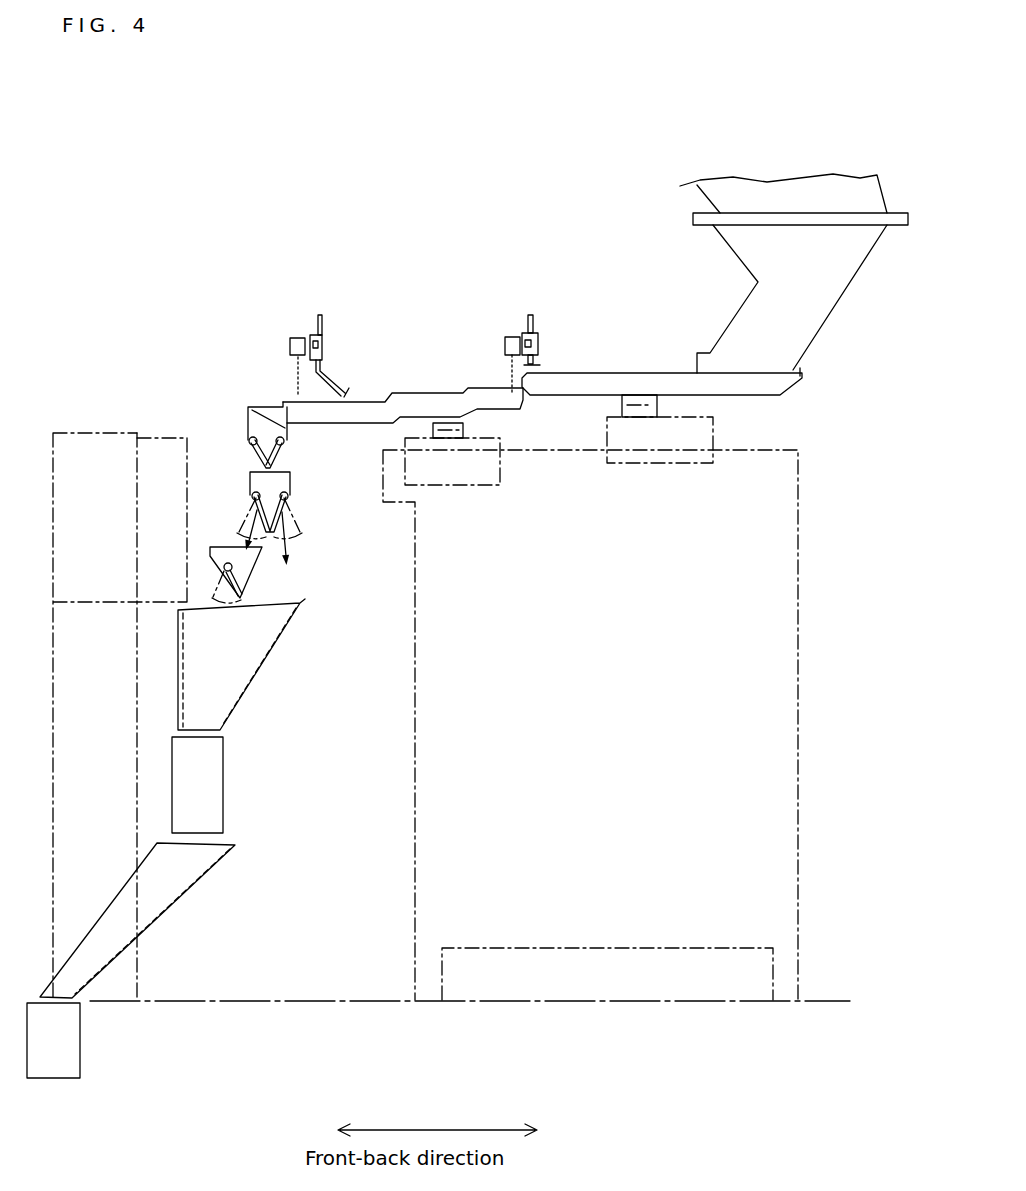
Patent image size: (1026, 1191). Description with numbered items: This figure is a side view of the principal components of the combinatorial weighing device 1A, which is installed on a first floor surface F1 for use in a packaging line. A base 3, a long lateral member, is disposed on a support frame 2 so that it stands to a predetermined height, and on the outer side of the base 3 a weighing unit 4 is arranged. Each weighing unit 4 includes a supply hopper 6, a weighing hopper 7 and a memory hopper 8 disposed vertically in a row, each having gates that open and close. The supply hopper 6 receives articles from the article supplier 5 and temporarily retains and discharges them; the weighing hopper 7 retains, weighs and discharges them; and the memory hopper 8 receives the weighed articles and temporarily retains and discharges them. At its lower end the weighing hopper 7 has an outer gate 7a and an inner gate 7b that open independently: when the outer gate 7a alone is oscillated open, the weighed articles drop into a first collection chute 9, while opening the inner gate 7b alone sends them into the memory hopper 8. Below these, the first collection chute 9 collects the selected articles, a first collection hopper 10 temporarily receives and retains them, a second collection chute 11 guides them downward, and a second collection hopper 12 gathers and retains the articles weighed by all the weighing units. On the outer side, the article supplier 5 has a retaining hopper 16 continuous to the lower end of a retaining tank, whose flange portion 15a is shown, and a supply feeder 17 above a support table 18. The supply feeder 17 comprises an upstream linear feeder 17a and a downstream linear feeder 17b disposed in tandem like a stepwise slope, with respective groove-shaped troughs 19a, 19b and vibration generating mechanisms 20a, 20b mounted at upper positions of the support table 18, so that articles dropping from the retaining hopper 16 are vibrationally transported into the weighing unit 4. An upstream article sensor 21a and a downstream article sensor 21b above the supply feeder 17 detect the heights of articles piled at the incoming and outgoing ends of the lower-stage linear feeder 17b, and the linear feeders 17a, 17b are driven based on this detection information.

The weighing device 1A is at (252, 208).
The support frame 2 is at (138, 690).
The base 3 is at (75, 432).
The weighing unit 4 is at (233, 450).
The article supplier 5 is at (390, 258).
The supply hopper 6 is at (262, 407).
The weighing hopper 7 is at (250, 485).
The outer gate 7a is at (288, 515).
The inner gate 7b is at (247, 515).
The memory hopper 8 is at (210, 549).
The first collection chute 9 is at (262, 670).
The first collection hopper 10 is at (223, 774).
The second collection chute 11 is at (177, 900).
The second collection hopper 12 is at (80, 1043).
The hopper flange 15a is at (707, 197).
The retaining hopper 16 is at (723, 332).
The supply feeder 17 is at (628, 290).
The upstream linear feeder 17a is at (632, 372).
The downstream linear feeder 17b is at (412, 389).
The support table 18 is at (800, 622).
The trough 19a is at (748, 390).
The trough 19b is at (353, 422).
The vibration generating mechanism 20a is at (690, 465).
The vibration generating mechanism 20b is at (502, 480).
The upstream article sensor 21a is at (505, 345).
The downstream article sensor 21b is at (290, 346).
The first floor surface F1 is at (848, 1000).